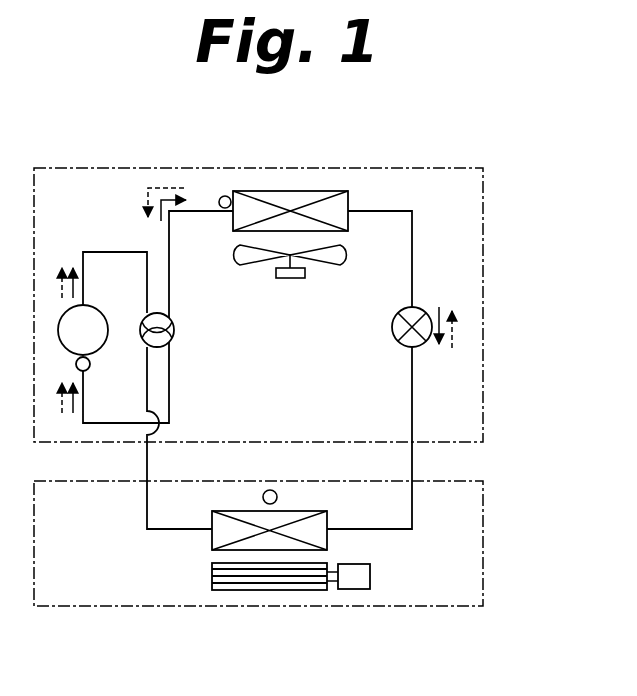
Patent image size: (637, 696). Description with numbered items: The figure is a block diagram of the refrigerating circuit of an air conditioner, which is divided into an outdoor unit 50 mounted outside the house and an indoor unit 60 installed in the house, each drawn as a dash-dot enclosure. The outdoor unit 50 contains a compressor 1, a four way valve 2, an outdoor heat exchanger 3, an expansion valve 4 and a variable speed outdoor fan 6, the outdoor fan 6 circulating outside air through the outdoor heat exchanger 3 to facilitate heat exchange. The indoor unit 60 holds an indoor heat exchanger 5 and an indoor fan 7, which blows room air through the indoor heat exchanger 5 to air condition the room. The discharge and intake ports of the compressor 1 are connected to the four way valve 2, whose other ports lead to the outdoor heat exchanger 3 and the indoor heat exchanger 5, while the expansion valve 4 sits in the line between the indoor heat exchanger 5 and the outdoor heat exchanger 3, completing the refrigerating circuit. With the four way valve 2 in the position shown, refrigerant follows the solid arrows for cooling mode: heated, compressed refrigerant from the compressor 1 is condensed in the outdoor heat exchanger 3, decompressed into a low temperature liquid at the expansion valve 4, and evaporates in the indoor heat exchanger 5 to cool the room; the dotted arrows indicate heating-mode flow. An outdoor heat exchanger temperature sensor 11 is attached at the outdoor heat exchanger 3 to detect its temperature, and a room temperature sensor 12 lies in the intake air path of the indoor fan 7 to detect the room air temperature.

The compressor 1 is at (86, 305).
The four way valve 2 is at (175, 330).
The outdoor heat exchanger 3 is at (349, 198).
The expansion valve 4 is at (392, 327).
The indoor heat exchanger 5 is at (210, 540).
The variable speed outdoor fan 6 is at (349, 256).
The indoor fan 7 is at (210, 573).
The outdoor heat exchanger temperature sensor 11 is at (226, 196).
The room temperature sensor 12 is at (278, 497).
The outdoor unit 50 is at (483, 287).
The indoor unit 60 is at (483, 507).